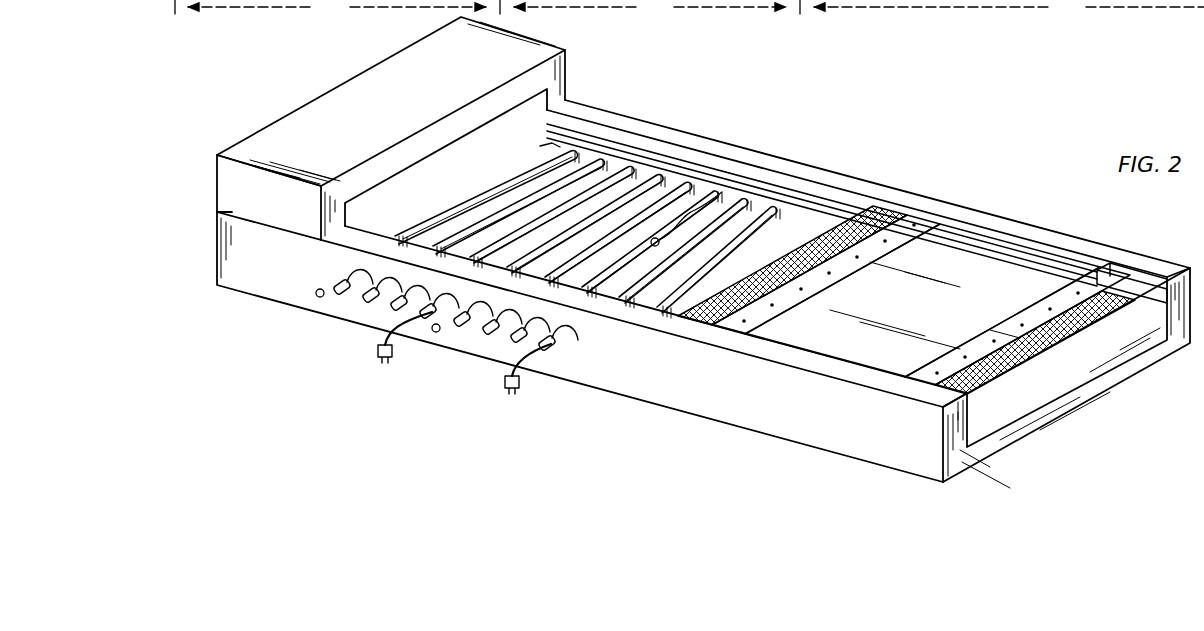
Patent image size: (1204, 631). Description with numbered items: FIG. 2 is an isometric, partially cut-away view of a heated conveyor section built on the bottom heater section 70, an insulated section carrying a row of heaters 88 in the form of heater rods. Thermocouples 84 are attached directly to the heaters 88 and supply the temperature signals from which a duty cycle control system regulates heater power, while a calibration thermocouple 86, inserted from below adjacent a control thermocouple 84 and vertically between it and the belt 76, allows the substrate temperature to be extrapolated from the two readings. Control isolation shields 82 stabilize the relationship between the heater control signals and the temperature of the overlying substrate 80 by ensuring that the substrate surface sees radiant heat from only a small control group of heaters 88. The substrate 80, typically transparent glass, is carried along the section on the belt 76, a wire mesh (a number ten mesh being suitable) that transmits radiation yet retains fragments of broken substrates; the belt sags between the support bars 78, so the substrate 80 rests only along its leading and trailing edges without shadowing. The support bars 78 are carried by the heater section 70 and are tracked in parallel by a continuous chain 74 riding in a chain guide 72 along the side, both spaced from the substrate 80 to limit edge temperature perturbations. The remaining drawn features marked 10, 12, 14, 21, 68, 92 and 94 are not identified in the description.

The heating section 10 is at (344, 10).
The central section 12 is at (657, 10).
The outlet section 14 is at (1009, 12).
The apparatus 21 is at (129, 11).
The cover housing 68 is at (547, 50).
The bottom heater section 70 is at (217, 238).
The chain guide 72 is at (550, 125).
The conveyor chain 74 is at (1005, 247).
The belt 76 is at (1120, 277).
The support bars 78 is at (895, 207).
The substrate 80 is at (948, 257).
The control isolation shields 82 is at (562, 140).
The thermocouples 84 is at (600, 165).
The calibration thermocouple 86 is at (700, 205).
The heaters 88 is at (393, 307).
The grommet 92 is at (314, 296).
The plug 94 is at (377, 367).